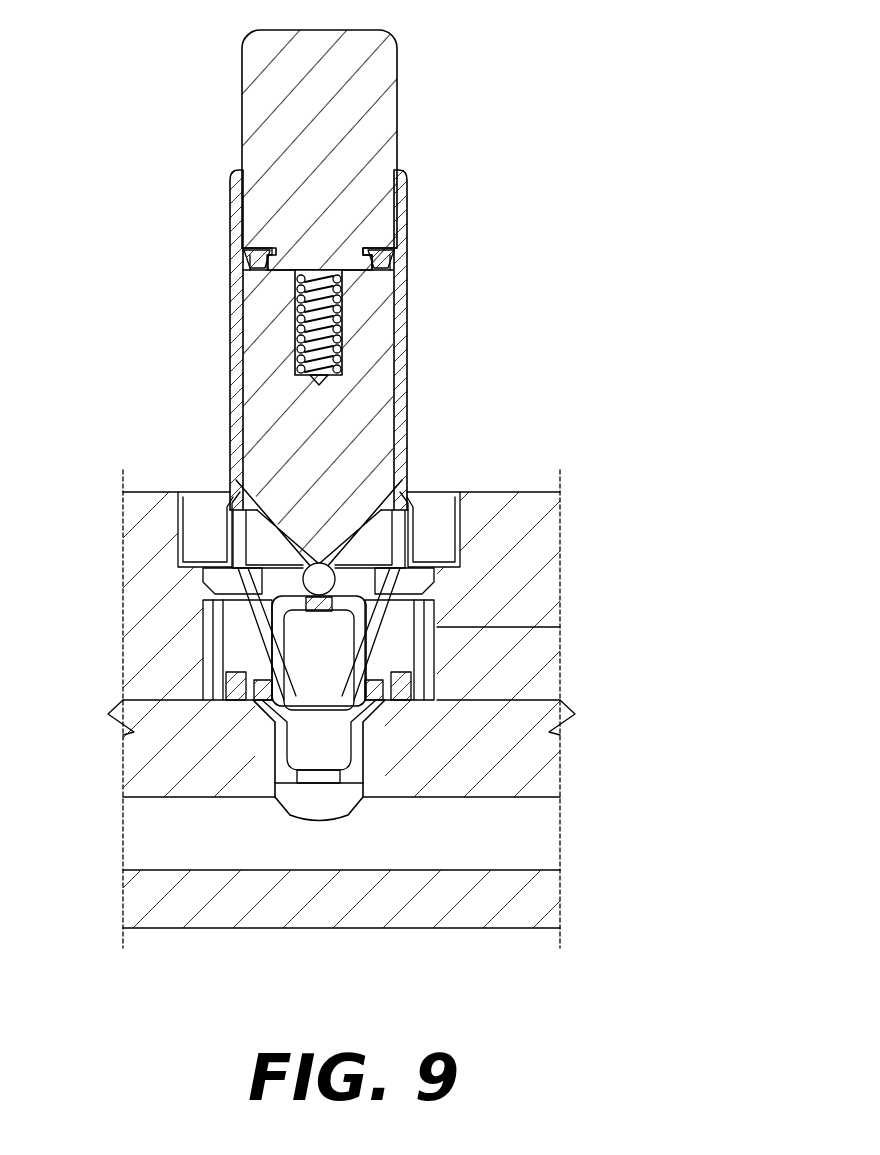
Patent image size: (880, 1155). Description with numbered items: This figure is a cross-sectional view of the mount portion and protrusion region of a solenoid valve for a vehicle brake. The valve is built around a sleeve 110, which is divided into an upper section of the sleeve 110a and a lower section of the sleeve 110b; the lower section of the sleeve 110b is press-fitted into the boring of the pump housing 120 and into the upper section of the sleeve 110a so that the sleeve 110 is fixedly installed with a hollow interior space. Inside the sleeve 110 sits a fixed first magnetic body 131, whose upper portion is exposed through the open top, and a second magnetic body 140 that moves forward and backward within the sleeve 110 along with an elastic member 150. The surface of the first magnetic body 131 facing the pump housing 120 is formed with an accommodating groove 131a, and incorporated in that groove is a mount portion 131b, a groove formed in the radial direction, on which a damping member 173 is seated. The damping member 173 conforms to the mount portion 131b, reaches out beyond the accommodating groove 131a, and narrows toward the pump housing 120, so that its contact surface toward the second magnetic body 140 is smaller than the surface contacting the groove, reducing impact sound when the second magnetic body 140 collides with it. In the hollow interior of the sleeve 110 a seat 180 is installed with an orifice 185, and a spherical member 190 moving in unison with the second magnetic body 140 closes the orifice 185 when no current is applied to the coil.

The first magnetic body 131 is at (387, 112).
The accommodating groove 131a is at (252, 266).
The mount portion 131b is at (363, 248).
The damping member 173 is at (392, 268).
The elastic member 150 is at (342, 348).
The second magnetic body 140 is at (385, 446).
The spherical member 190 is at (305, 572).
The pump housing 120 is at (494, 492).
The upper section of the sleeve 110a is at (410, 547).
The lower section of the sleeve 110b is at (410, 632).
The sleeve 110 is at (675, 530).
The orifice 185 is at (283, 597).
The seat 180 is at (286, 650).